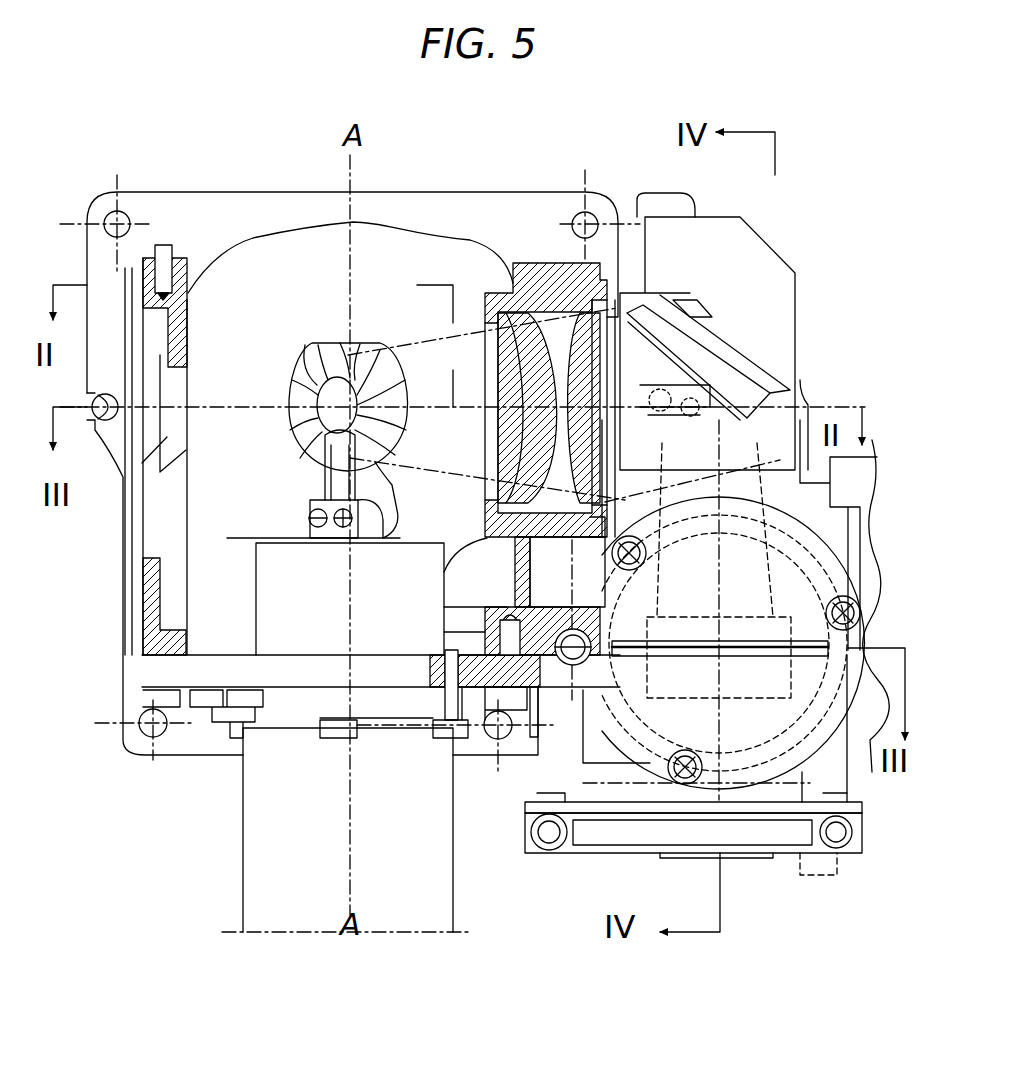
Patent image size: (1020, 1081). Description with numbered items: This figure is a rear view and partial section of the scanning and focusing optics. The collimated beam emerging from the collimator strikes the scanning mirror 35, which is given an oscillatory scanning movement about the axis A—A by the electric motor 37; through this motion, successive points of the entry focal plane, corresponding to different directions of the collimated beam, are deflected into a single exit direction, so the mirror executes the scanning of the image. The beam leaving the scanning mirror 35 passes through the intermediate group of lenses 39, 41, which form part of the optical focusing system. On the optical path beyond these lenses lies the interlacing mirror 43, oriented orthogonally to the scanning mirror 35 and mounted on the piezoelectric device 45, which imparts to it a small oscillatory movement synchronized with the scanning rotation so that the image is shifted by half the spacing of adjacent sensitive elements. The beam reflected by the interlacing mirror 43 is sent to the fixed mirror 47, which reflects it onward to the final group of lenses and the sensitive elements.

The scanning mirror 35 is at (315, 360).
The electric motor 37 is at (262, 872).
The lens of intermediate group 39 is at (525, 455).
The lens of intermediate group 41 is at (576, 515).
The interlacing mirror 43 is at (672, 372).
The piezoelectric device 45 is at (773, 296).
The fixed mirror 47 is at (790, 682).